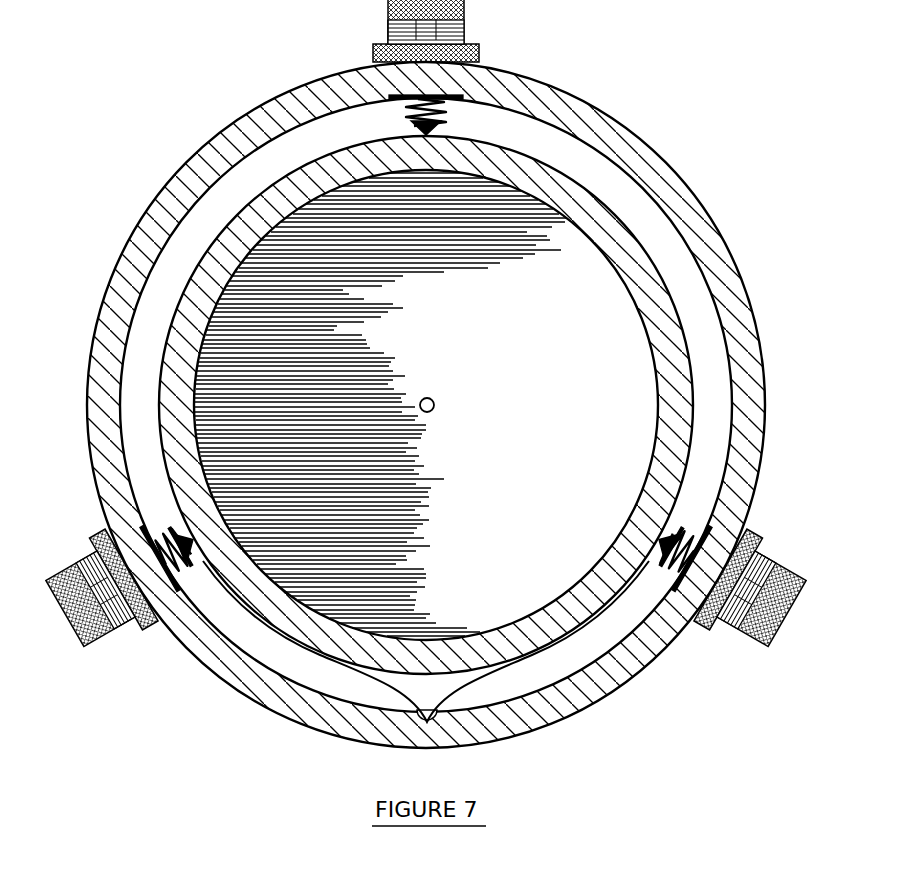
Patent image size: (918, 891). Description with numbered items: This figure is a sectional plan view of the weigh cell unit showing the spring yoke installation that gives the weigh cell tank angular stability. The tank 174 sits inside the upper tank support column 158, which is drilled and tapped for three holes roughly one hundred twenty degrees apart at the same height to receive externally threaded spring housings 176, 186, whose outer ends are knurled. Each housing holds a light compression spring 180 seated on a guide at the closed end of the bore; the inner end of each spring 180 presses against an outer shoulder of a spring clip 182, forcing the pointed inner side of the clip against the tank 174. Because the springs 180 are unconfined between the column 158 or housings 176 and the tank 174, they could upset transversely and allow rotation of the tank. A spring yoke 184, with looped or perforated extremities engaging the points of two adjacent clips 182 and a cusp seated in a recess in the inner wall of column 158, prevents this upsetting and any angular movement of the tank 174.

The upper tank support column 158 is at (645, 161).
The tank 174 is at (661, 356).
The spring housing 176 is at (105, 636).
The compression spring 180 is at (163, 540).
The spring clip 182 is at (181, 558).
The spring yoke 184 is at (410, 697).
The adjustment knob 186 is at (750, 545).